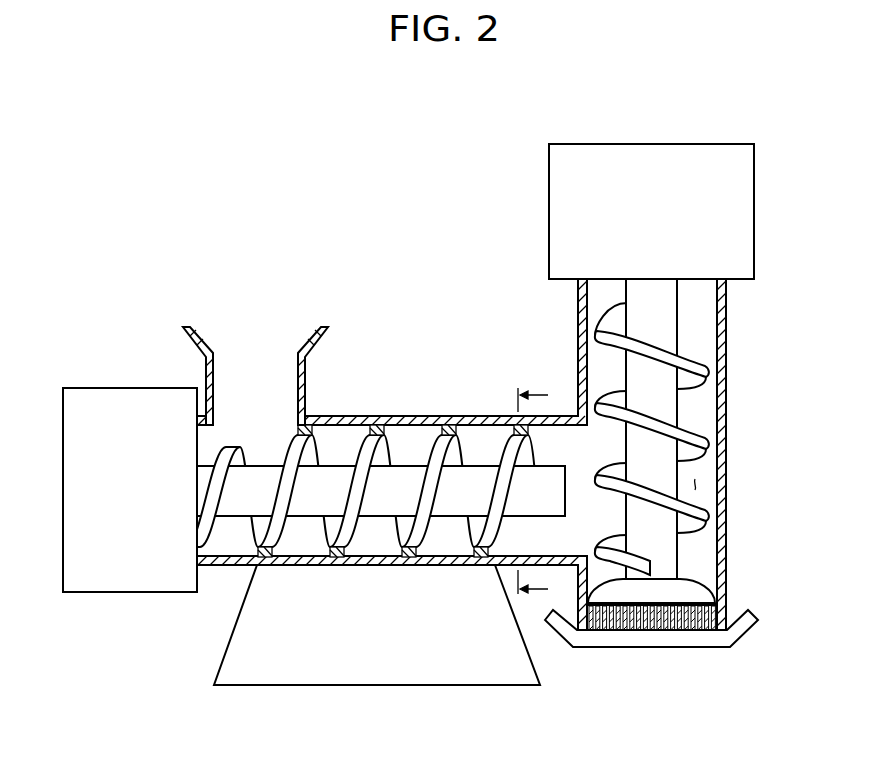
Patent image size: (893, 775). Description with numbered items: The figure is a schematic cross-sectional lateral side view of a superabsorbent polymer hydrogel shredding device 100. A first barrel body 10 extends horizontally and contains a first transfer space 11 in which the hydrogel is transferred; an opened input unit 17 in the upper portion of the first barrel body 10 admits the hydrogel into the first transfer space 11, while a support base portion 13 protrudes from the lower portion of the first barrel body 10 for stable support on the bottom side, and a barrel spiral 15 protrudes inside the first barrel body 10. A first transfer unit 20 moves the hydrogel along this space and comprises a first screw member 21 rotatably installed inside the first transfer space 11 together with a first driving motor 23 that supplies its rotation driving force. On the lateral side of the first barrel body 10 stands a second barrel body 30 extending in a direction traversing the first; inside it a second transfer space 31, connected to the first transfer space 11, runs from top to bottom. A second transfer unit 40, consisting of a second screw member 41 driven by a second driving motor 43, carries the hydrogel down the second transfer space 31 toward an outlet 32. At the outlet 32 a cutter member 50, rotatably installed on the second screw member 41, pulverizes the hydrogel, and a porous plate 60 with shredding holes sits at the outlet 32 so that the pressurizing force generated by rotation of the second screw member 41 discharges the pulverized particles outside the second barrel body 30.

The superabsorbent polymer hydrogel shredding device 100 is at (243, 186).
The first transfer unit 20 is at (228, 283).
The first screw member 21 is at (297, 455).
The first driving motor 23 is at (122, 403).
The input unit 17 is at (309, 345).
The first barrel body 10 is at (423, 416).
The first transfer space 11 is at (341, 446).
The barrel spiral 15 is at (378, 425).
The support base portion 13 is at (483, 662).
The second barrel body 30 is at (726, 397).
The second transfer space 31 is at (695, 483).
The outlet 32 is at (655, 648).
The second transfer unit 40 is at (798, 198).
The second screw member 41 is at (688, 372).
The second driving motor 43 is at (738, 214).
The cutter member 50 is at (688, 592).
The porous plate 60 is at (727, 626).